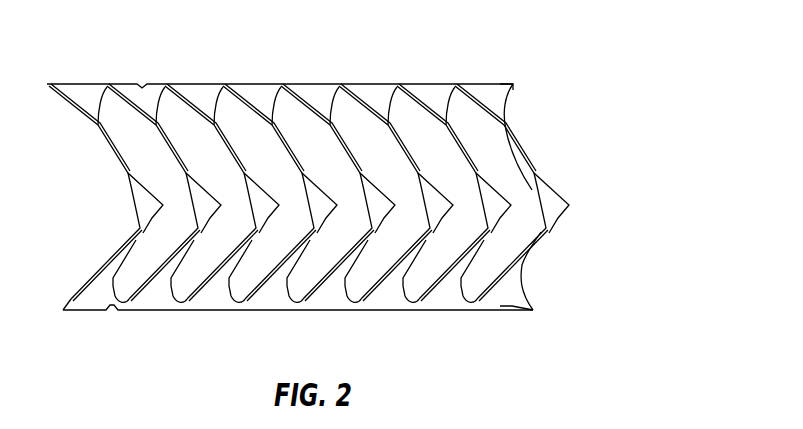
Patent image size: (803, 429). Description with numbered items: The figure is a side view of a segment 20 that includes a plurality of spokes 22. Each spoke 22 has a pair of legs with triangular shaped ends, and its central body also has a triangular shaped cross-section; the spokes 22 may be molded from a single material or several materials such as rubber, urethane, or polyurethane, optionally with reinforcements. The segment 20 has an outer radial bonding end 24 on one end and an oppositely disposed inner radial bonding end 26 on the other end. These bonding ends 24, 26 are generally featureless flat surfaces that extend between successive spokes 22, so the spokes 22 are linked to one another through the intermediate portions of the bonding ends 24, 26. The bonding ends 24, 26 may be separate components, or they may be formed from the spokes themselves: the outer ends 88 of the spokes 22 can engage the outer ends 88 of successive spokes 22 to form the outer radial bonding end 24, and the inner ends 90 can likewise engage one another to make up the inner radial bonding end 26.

The segment 20 is at (583, 50).
The spoke 22 is at (563, 188).
The outer radial bonding end 24 is at (266, 83).
The inner radial bonding end 26 is at (213, 314).
The outer end of spoke 88 is at (496, 83).
The inner end of spoke 90 is at (505, 310).